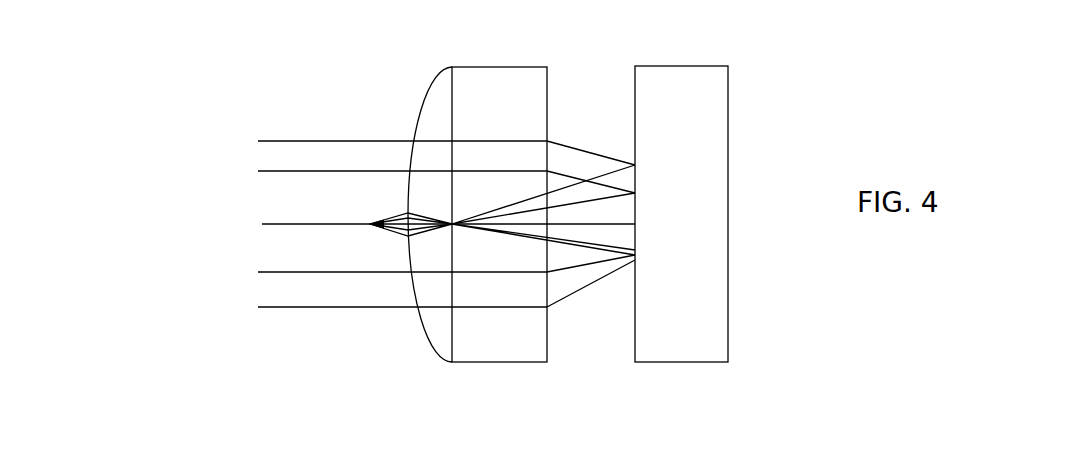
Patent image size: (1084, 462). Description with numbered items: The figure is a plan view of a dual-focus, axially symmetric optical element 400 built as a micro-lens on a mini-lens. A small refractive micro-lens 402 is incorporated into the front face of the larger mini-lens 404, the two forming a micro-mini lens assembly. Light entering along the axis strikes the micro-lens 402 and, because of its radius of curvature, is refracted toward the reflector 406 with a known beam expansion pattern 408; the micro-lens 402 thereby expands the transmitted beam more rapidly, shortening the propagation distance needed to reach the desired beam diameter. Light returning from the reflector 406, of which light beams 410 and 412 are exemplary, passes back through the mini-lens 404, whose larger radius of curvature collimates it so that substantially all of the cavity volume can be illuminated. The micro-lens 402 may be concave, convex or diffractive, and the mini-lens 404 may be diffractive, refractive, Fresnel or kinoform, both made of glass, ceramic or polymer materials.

The dual-focus axially symmetric optical element 400 is at (184, 91).
The micro-lens 402 is at (410, 258).
The mini-lens 404 is at (528, 120).
The reflector 406 is at (704, 151).
The beam expansion pattern 408 is at (504, 250).
The light beam 410 is at (292, 172).
The light beam 412 is at (280, 272).